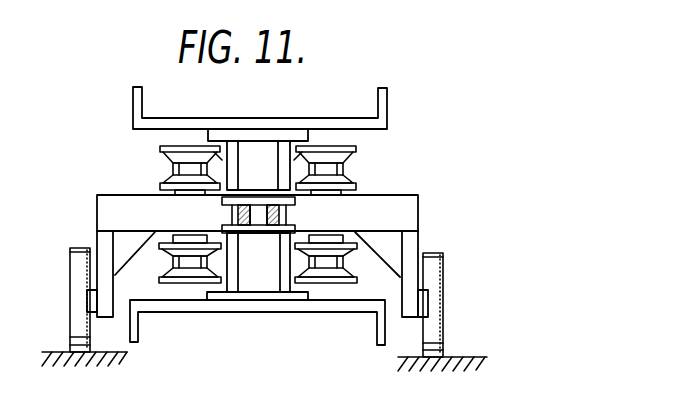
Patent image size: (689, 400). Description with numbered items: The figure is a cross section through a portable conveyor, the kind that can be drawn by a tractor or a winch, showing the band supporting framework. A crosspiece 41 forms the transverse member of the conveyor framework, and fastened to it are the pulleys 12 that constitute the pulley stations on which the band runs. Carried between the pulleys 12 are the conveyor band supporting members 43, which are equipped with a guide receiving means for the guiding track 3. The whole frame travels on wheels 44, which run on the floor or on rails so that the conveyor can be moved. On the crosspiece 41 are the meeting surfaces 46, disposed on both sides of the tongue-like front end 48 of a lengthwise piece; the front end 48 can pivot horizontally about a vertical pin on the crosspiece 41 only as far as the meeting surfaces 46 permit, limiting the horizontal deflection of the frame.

The guiding track 3 is at (215, 157).
The pulleys 12 is at (180, 146).
The crosspieces 41 is at (393, 208).
The conveyor band supporting members 43 is at (231, 144).
The wheels 44 is at (78, 320).
The meeting surfaces 46 is at (232, 215).
The front end of lengthwise piece 48 is at (271, 233).